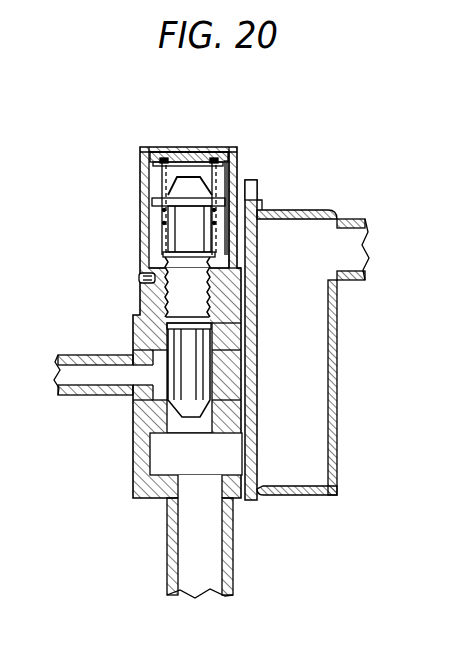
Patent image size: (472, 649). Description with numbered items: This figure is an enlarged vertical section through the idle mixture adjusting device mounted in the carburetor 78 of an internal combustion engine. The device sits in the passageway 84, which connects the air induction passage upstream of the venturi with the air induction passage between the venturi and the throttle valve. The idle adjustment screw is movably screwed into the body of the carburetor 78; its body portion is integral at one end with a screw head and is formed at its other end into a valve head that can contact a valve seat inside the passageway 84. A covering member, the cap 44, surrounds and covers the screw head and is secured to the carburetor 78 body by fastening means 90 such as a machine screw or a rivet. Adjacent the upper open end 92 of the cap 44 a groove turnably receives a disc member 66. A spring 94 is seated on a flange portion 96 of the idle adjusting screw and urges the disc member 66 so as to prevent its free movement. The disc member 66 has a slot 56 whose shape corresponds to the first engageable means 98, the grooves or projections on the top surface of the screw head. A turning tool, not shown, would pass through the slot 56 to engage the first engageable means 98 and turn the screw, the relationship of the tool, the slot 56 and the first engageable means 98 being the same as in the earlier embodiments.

The cap 44 is at (141, 212).
The upper open end 92 is at (212, 150).
The slot 56 is at (192, 162).
The disc member 66 is at (167, 156).
The spring 94 is at (233, 178).
The first engageable means 98 is at (206, 168).
The flange portion 96 is at (160, 210).
The fastening means 90 is at (140, 278).
The passageway 84 is at (98, 378).
The carburetor 78 is at (345, 407).